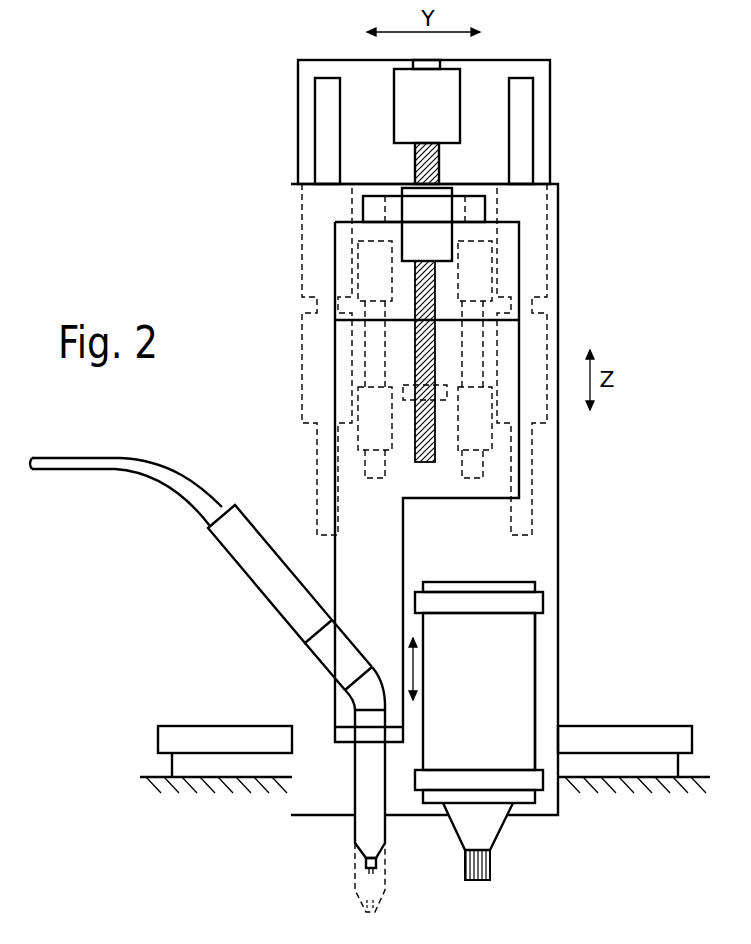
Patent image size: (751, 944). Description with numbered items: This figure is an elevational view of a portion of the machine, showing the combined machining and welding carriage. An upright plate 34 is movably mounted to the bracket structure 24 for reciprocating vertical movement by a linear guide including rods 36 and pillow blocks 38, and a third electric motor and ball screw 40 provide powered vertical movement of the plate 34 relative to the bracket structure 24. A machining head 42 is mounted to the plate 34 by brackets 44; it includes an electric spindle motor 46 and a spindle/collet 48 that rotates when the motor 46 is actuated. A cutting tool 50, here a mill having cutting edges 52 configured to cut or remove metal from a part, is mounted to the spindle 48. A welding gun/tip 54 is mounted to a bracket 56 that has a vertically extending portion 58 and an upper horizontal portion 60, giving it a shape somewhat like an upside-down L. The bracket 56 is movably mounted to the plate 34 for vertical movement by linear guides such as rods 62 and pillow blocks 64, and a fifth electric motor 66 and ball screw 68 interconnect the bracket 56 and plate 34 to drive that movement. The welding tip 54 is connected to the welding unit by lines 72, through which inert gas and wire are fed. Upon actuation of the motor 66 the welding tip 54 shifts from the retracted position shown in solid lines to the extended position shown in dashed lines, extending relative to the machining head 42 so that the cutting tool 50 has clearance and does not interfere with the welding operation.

The bracket structure 24 is at (298, 120).
The upright plate 34 is at (558, 343).
The rods 36 is at (525, 110).
The pillow blocks 38 is at (313, 345).
The third electric motor and ball screw 40 is at (460, 79).
The machining head 42 is at (536, 677).
The brackets 44 is at (543, 600).
The electric spindle motor 46 is at (535, 726).
The spindle/collet 48 is at (497, 832).
The cutting tool 50 is at (490, 870).
The cutting edges 52 is at (467, 868).
The welding gun/tip 54 is at (353, 827).
The bracket 56 is at (334, 588).
The vertically extending portion 58 is at (335, 565).
The upper horizontal portion 60 is at (355, 218).
The rods 62 is at (400, 478).
The pillow blocks 64 is at (462, 246).
The fifth electric motor 66 is at (440, 213).
The ball screw 68 is at (435, 276).
The lines 72 is at (137, 472).